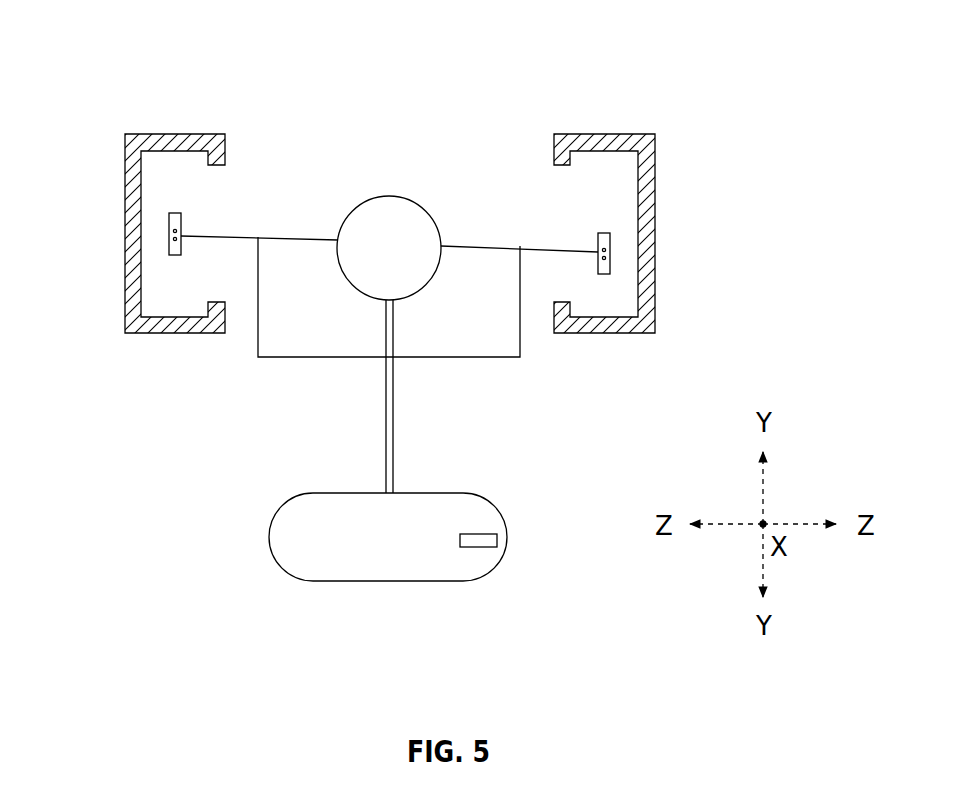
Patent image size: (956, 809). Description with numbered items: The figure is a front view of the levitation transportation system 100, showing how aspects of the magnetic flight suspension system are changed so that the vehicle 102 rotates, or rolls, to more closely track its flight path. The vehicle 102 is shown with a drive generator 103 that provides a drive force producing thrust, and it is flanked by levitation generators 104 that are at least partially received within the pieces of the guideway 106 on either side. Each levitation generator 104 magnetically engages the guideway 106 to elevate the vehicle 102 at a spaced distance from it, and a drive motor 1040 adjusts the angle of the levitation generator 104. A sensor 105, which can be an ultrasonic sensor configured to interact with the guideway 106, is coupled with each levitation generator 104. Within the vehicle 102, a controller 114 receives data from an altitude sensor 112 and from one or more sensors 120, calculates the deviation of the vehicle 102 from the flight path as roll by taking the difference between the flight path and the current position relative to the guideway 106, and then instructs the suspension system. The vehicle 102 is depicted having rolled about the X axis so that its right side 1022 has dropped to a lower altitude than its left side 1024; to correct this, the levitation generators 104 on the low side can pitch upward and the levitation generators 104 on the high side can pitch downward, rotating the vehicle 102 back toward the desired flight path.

The levitation transportation system 100 is at (528, 44).
The vehicle 102 is at (455, 493).
The right side 1022 is at (508, 519).
The left side 1024 is at (264, 534).
The drive generator 103 is at (389, 197).
The levitation generator 104 is at (176, 213).
The sensor 105 is at (172, 236).
The drive motor 1040 is at (172, 246).
The guideway 106 is at (125, 312).
The altitude sensor 112 is at (480, 547).
The controller 114 is at (475, 547).
The sensor 120 is at (497, 540).